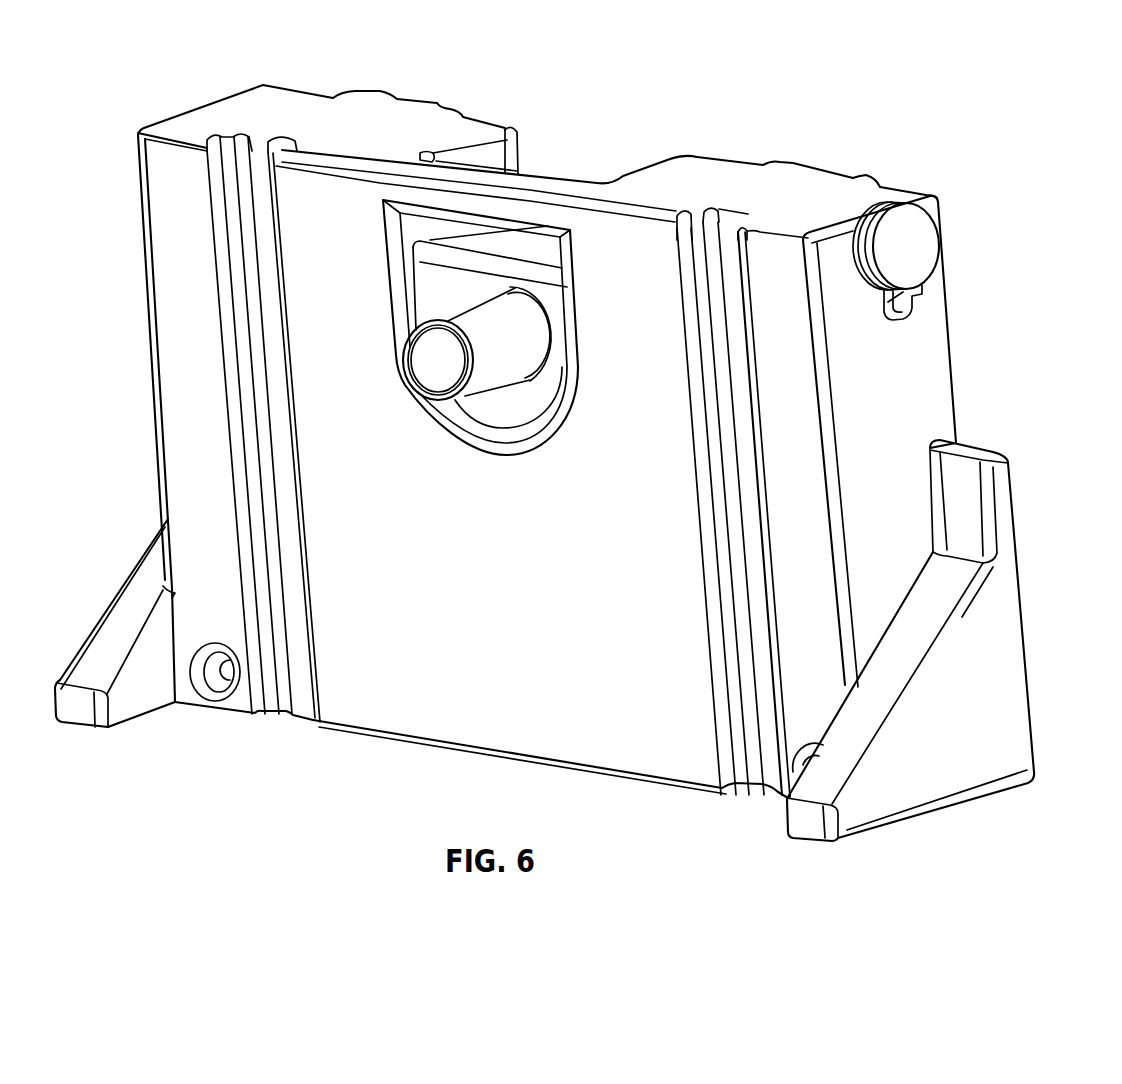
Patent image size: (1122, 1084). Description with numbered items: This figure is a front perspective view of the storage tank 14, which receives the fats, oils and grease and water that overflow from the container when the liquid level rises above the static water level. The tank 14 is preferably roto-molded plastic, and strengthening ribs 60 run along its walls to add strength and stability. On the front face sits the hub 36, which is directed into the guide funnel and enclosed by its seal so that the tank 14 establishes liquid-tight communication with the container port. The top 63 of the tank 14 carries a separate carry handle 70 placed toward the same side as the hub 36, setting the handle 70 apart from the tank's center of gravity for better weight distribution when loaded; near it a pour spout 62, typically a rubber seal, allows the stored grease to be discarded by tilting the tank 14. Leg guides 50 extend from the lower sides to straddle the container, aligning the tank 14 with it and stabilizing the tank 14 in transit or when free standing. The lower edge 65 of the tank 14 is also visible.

The storage tank 14 is at (504, 575).
The hub 36 is at (438, 362).
The leg guides 50 is at (140, 689).
The strengthening ribs 60 is at (287, 693).
The pour spout 62 is at (918, 250).
The top 63 is at (779, 192).
The bottom wall 65 is at (482, 727).
The carry handle 70 is at (531, 175).